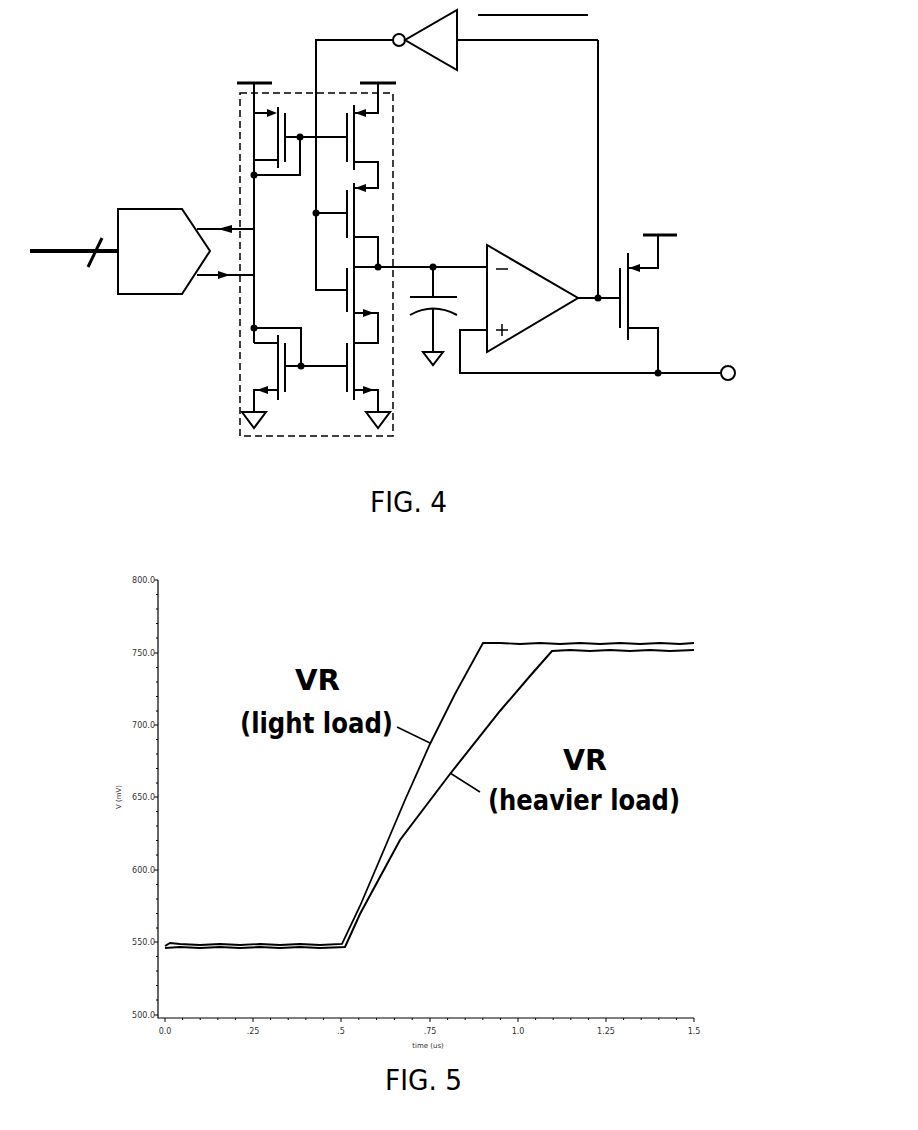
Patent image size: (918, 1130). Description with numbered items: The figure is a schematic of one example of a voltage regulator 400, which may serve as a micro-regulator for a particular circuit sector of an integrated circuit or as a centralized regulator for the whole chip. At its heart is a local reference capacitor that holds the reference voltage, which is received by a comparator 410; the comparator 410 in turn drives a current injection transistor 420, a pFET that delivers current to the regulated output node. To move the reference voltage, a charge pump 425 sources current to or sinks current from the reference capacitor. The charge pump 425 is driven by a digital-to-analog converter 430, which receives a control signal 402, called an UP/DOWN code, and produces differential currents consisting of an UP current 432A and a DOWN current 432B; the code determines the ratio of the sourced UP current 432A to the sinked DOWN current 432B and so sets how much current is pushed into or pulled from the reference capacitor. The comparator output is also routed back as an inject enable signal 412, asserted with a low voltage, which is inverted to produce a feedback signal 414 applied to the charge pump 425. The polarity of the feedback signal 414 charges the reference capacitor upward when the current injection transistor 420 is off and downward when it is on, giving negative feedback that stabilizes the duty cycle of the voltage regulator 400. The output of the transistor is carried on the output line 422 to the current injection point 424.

The voltage regulator 400 is at (96, 76).
The control signal 402 is at (70, 254).
The digital-to-analog converter 430 is at (135, 273).
The UP current 432A is at (212, 228).
The DOWN current 432B is at (203, 281).
The feedback signal 414 is at (316, 258).
The charge pump 425 is at (238, 366).
The comparator 410 is at (533, 280).
The inject enable signal 412 is at (597, 142).
The current injection transistor 420 is at (618, 311).
The output line 422 is at (685, 372).
The current injection point 424 is at (728, 366).